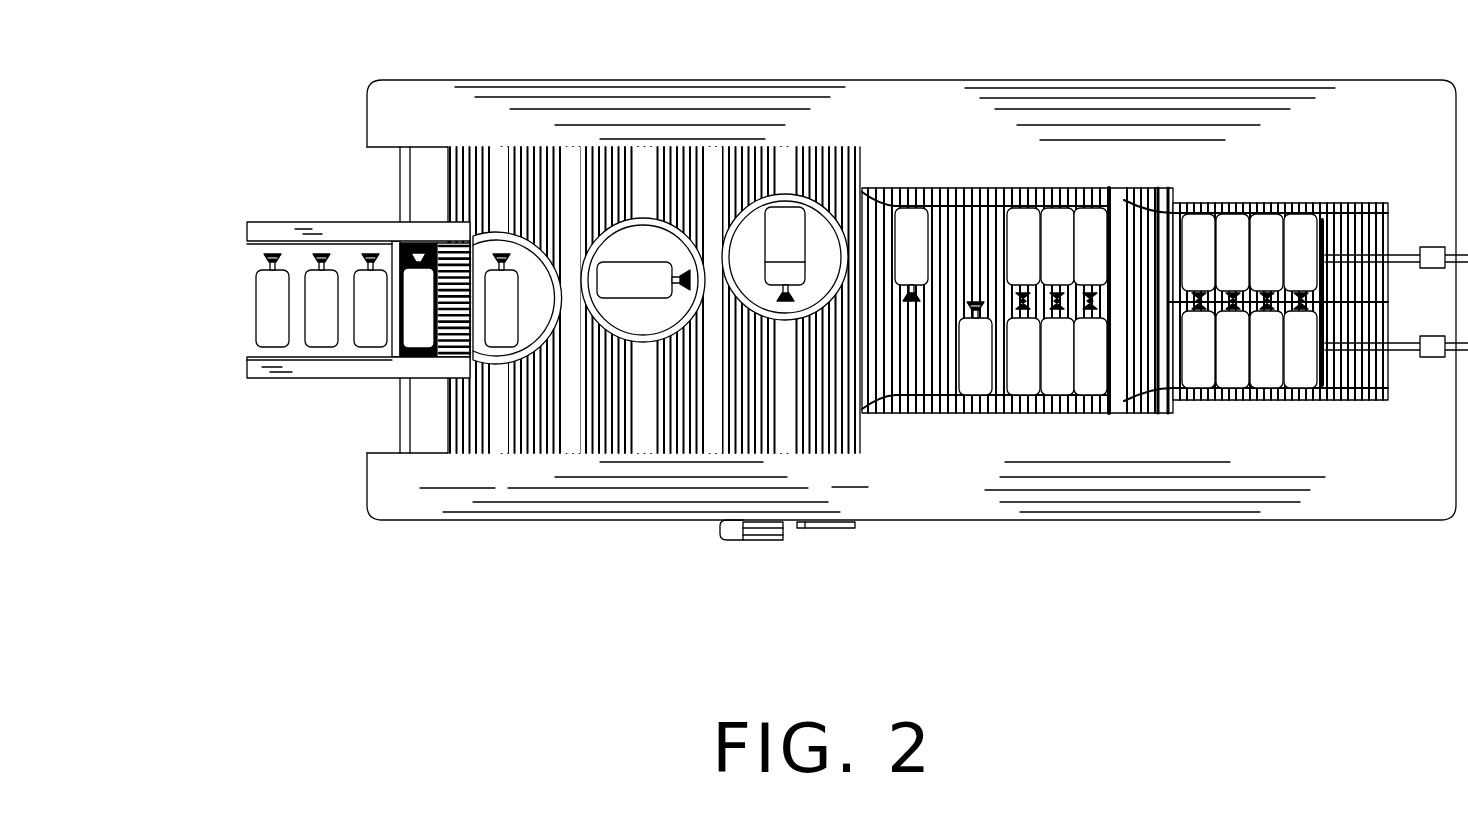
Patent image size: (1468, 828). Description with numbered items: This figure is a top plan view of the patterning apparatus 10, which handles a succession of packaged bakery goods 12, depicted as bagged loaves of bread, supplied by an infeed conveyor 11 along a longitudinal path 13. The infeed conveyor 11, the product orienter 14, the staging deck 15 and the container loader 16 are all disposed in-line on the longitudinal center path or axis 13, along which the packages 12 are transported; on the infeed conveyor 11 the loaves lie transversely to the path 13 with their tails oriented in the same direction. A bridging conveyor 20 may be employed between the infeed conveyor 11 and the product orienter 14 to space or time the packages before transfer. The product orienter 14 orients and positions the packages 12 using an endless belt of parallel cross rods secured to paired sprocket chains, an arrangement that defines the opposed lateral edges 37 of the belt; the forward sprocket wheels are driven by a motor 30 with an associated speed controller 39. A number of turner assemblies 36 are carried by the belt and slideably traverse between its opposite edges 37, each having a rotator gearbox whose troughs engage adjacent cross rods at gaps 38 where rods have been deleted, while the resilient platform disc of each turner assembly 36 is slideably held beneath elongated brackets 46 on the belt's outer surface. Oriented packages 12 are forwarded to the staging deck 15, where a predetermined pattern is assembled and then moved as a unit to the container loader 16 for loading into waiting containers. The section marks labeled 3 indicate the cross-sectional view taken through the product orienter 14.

The patterning apparatus 10 is at (903, 100).
The infeed conveyor 11 is at (315, 186).
The packaged bakery goods 12 is at (268, 346).
The longitudinal path 13 is at (244, 310).
The product orienter 14 is at (641, 138).
The staging deck 15 is at (1030, 178).
The container loader 16 is at (1280, 182).
The bridging conveyor 20 is at (407, 242).
The motor 30 is at (743, 540).
The turner assemblies 36 is at (659, 326).
The lateral edges of belt 37 is at (540, 147).
The gaps in belt 38 is at (790, 155).
The speed controller 39 is at (855, 525).
The elongated brackets 46 is at (575, 157).
The section line 3- 3 is at (344, 470).